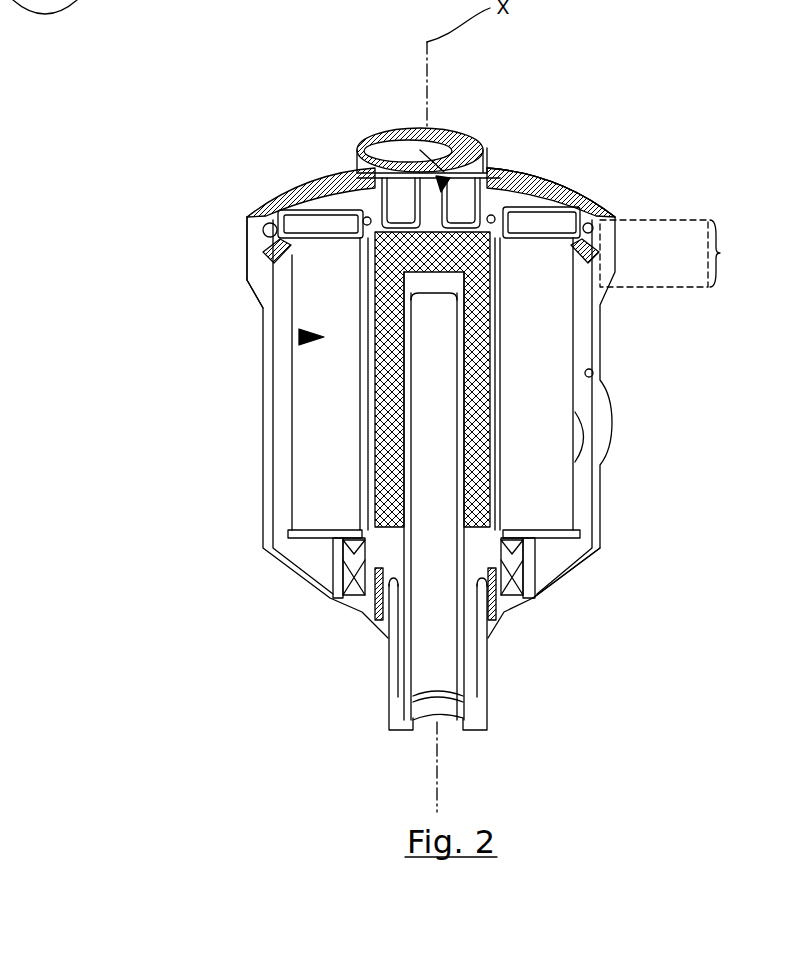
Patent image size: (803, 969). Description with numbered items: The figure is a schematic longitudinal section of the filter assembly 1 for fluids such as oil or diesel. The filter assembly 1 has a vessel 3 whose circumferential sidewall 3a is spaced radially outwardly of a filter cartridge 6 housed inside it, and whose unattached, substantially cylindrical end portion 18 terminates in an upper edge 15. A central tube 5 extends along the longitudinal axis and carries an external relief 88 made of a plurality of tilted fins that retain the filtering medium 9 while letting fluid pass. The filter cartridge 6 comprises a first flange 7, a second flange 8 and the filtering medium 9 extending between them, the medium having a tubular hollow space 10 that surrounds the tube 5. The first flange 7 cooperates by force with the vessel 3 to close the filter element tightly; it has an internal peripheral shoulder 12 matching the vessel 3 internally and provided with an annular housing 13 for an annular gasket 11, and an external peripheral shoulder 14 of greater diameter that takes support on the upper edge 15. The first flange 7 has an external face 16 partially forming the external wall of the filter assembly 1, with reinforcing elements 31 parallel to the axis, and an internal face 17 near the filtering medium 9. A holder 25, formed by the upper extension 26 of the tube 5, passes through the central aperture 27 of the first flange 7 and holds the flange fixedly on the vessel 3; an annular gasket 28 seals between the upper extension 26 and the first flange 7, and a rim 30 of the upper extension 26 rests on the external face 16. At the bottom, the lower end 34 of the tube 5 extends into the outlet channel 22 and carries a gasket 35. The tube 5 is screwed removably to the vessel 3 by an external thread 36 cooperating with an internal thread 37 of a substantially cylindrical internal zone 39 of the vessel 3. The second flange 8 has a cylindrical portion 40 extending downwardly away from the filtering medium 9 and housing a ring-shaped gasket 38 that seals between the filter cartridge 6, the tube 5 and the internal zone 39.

The filter assembly 1 is at (172, 486).
The vessel 3 is at (593, 503).
The circumferential sidewall 3a is at (598, 377).
The tube 5 is at (488, 394).
The filter cartridge 6 is at (298, 338).
The first flange 7 is at (545, 178).
The second flange 8 is at (547, 540).
The filtering medium 9 is at (551, 340).
The tubular hollow space 10 is at (503, 312).
The gasket 11 is at (572, 224).
The internal peripheral shoulder 12 is at (278, 238).
The annular housing 13 is at (248, 238).
The external peripheral shoulder 14 is at (268, 201).
The upper edge 15 is at (248, 214).
The external face 16 is at (312, 188).
The internal face 17 is at (285, 237).
The end portion 18 is at (673, 253).
The outlet channel 22 is at (388, 723).
The holder 25 is at (488, 150).
The upper extension 26 is at (500, 155).
The aperture 27 is at (354, 150).
The gasket 28 is at (555, 206).
The rim 30 is at (355, 147).
The reinforcing elements 31 is at (283, 193).
The lower end 34 is at (395, 709).
The gasket 35 is at (408, 698).
The external thread 36 is at (512, 629).
The internal thread 37 is at (388, 614).
The gasket 38 is at (338, 588).
The internal zone 39 is at (360, 613).
The cylindrical portion 40 is at (333, 552).
The external relief 88 is at (376, 378).